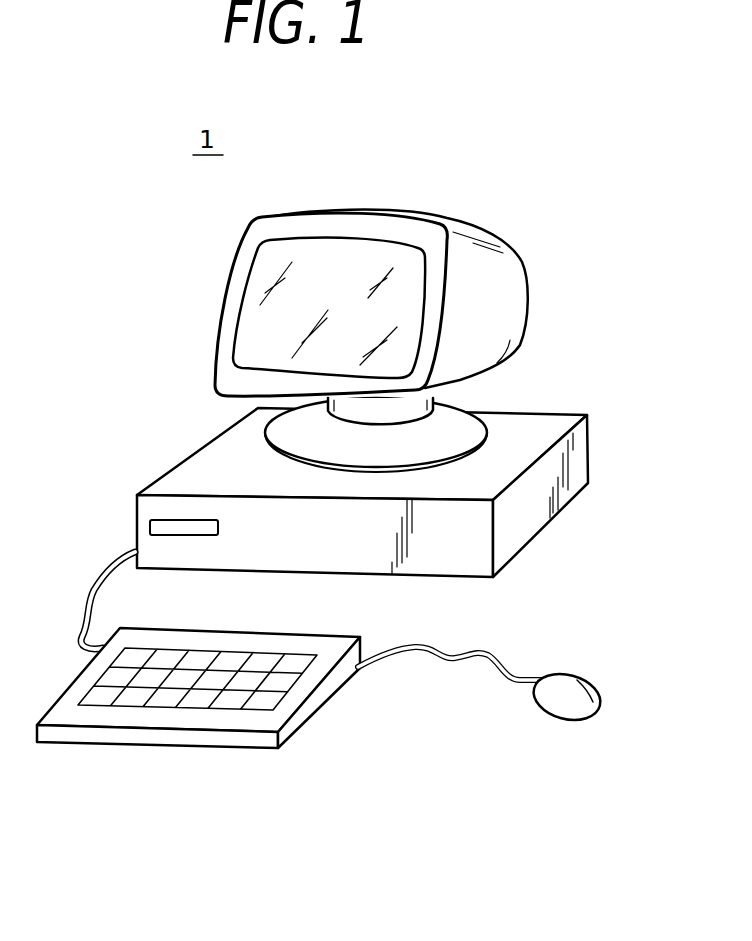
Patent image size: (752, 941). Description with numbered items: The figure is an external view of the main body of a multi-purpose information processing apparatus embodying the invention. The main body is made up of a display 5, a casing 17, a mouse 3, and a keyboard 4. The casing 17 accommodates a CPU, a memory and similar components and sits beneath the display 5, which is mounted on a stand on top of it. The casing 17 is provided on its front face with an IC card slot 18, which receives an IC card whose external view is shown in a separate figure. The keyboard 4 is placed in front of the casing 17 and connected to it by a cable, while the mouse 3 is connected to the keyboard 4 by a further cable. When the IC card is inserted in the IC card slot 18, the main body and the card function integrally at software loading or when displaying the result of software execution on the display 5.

The mouse 3 is at (598, 697).
The keyboard 4 is at (327, 700).
The display 5 is at (428, 221).
The casing 17 is at (578, 462).
The IC card slot 18 is at (150, 528).